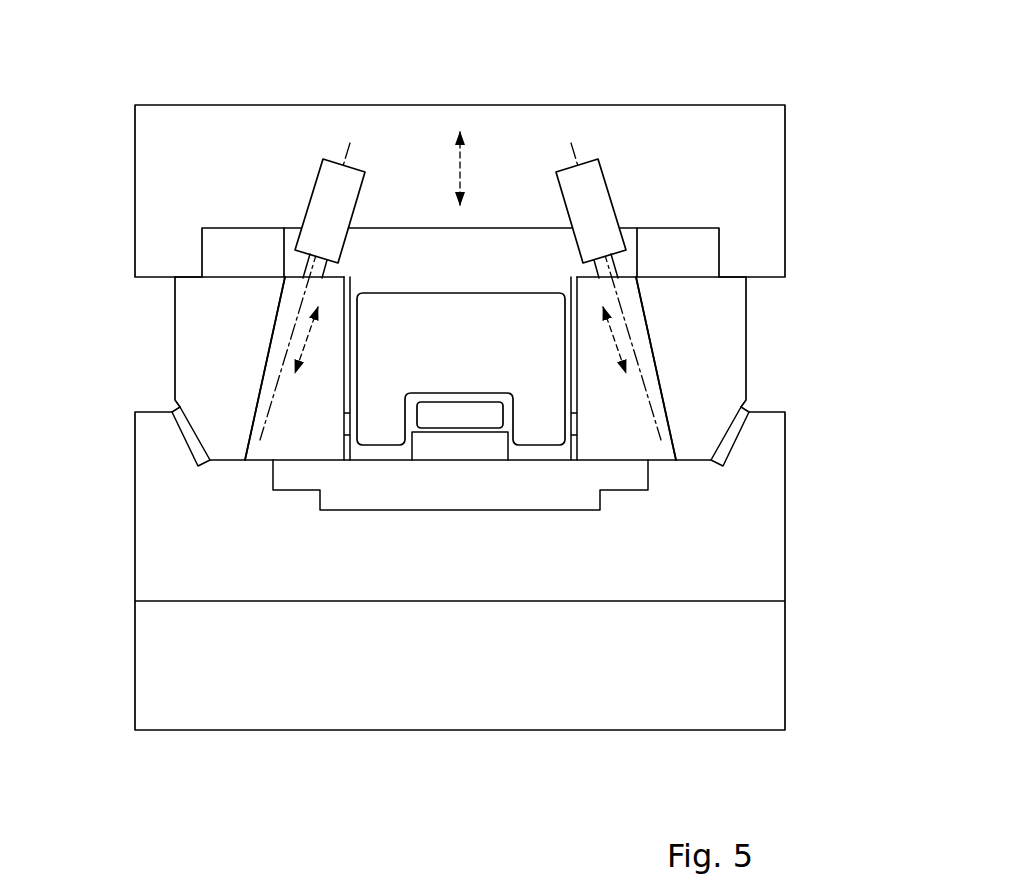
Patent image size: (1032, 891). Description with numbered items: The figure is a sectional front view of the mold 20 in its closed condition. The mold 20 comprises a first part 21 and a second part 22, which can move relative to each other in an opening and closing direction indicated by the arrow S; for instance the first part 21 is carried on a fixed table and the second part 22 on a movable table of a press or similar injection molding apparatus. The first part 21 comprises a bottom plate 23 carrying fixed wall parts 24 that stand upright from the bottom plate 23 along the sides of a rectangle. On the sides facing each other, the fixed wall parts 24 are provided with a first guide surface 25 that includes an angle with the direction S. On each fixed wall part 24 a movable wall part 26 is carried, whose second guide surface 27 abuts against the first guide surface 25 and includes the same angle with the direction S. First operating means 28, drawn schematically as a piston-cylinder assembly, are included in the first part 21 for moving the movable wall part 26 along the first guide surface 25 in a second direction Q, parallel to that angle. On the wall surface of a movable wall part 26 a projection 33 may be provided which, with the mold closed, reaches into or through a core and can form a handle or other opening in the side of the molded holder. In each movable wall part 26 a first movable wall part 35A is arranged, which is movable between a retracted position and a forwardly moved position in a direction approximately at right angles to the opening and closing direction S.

The mold 20 is at (830, 269).
The first part 21 is at (812, 137).
The second part 22 is at (812, 671).
The bottom plate 23 is at (750, 187).
The fixed wall part 24 is at (207, 344).
The first guide surface 25 is at (277, 309).
The movable wall part 26 is at (310, 390).
The second guide surface 27 is at (460, 368).
The first operating means 28 is at (313, 175).
The projection 33 is at (483, 413).
The first movable wall part 35A is at (382, 412).